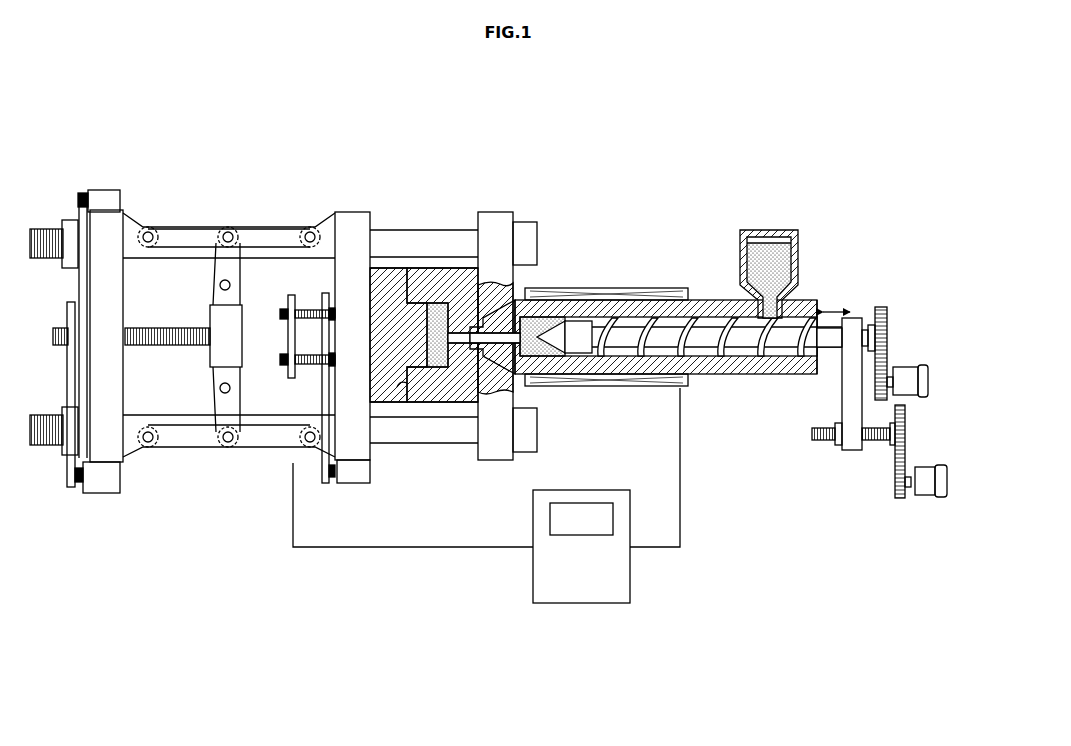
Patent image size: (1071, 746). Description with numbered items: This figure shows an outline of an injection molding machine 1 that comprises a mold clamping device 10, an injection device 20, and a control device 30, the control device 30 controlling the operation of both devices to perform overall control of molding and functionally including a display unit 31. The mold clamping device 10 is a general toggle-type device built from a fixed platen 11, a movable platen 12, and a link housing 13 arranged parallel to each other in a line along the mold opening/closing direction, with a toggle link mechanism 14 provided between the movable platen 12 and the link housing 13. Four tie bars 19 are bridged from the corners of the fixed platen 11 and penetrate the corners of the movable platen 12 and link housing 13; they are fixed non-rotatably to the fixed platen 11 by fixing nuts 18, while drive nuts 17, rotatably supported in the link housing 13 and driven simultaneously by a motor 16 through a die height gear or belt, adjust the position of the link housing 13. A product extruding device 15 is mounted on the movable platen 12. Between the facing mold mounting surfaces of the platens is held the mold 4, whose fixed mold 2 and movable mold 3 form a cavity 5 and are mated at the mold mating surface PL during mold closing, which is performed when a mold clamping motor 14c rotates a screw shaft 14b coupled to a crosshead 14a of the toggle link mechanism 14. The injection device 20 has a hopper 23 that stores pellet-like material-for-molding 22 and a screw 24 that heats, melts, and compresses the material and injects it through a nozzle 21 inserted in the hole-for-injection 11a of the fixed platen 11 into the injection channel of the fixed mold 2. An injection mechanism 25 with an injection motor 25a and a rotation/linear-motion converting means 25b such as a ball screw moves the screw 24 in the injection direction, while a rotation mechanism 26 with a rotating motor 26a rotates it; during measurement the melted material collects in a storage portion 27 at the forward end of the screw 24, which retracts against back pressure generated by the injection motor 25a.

The injection molding machine 1 is at (607, 101).
The mold clamping device 10 is at (477, 152).
The injection device 20 is at (643, 186).
The control device 30 is at (607, 474).
The display unit 31 is at (578, 510).
The fixed mold 2 is at (453, 277).
The movable mold 3 is at (393, 280).
The mold 4 is at (472, 177).
The cavity 5 is at (438, 330).
The mold mating surface PL is at (397, 387).
The fixed platen 11 is at (493, 222).
The hole-for-injection 11a is at (502, 305).
The movable platen 12 is at (352, 220).
The link housing 13 is at (118, 242).
The toggle link mechanism 14 is at (193, 232).
The crosshead 14a is at (242, 338).
The screw shaft 14b is at (157, 327).
The mold clamping motor 14c is at (100, 488).
The product extruding device 15 is at (305, 288).
The motor 16 is at (103, 200).
The drive nuts 17 is at (70, 222).
The fixing nuts 18 is at (526, 243).
The tie bars 19 is at (390, 240).
The nozzle 21 is at (482, 355).
The material-for-molding 22 is at (770, 245).
The hopper 23 is at (799, 262).
The screw 24 is at (715, 350).
The injection mechanism 25 is at (902, 510).
The injection motor 25a is at (925, 492).
The rotation/linear-motion converting means 25b is at (866, 458).
The rotation mechanism 26 is at (885, 305).
The rotating motor 26a is at (900, 378).
The storage portion 27 is at (540, 353).